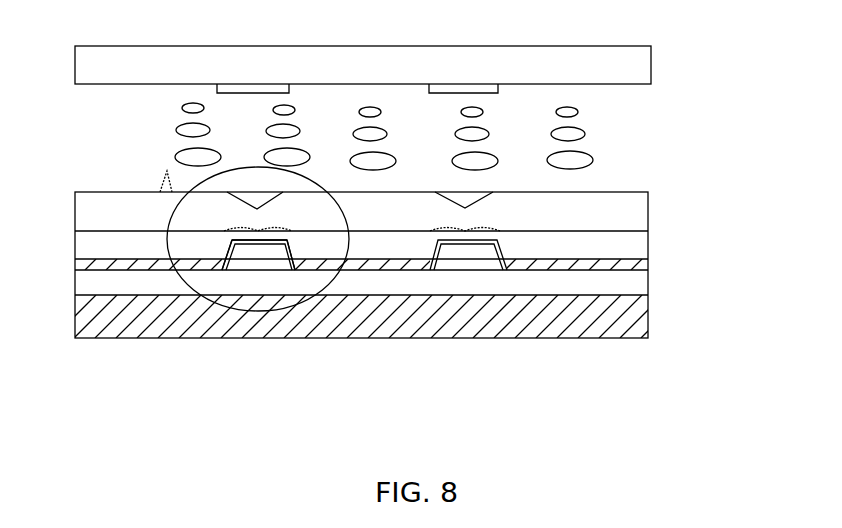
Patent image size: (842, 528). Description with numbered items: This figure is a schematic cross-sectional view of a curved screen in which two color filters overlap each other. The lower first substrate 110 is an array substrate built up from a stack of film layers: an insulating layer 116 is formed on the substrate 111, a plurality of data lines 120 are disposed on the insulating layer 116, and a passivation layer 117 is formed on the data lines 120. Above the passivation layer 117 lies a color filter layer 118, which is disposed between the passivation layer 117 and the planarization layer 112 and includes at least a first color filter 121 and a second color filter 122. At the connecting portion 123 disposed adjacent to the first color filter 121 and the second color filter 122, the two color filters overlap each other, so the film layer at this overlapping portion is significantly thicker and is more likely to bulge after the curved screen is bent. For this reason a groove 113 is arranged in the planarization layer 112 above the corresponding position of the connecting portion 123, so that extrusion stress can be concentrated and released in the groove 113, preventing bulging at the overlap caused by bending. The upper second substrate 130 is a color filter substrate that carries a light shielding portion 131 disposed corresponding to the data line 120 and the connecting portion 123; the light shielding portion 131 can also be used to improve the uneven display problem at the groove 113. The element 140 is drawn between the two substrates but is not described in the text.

The first substrate 110 is at (752, 182).
The substrate 111 is at (635, 320).
The planarization layer 112 is at (376, 205).
The groove 113 is at (253, 198).
The insulating layer 116 is at (633, 281).
The passivation layer 117 is at (92, 260).
The color filter layer 118 is at (317, 300).
The data line 120 is at (488, 259).
The first color filter 121 is at (182, 242).
The second color filter 122 is at (314, 313).
The connecting portion 123 is at (257, 247).
The second substrate 130 is at (640, 68).
The light shielding portion 131 is at (453, 92).
The ink droplets 140 is at (585, 134).